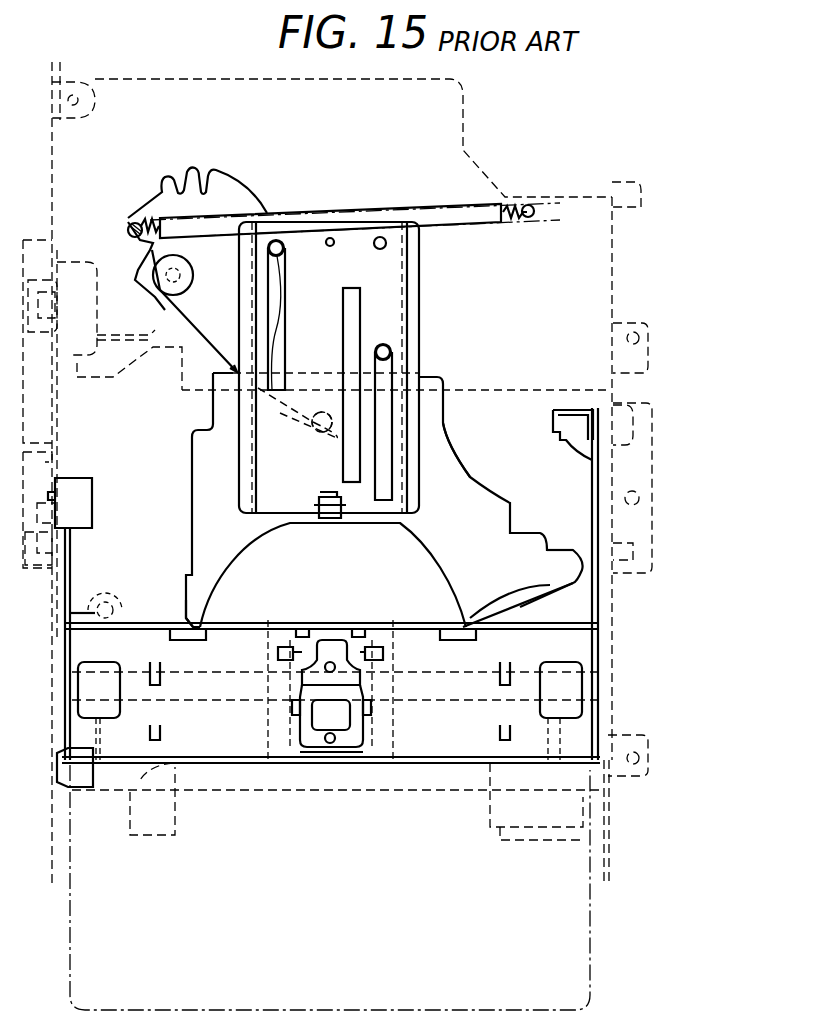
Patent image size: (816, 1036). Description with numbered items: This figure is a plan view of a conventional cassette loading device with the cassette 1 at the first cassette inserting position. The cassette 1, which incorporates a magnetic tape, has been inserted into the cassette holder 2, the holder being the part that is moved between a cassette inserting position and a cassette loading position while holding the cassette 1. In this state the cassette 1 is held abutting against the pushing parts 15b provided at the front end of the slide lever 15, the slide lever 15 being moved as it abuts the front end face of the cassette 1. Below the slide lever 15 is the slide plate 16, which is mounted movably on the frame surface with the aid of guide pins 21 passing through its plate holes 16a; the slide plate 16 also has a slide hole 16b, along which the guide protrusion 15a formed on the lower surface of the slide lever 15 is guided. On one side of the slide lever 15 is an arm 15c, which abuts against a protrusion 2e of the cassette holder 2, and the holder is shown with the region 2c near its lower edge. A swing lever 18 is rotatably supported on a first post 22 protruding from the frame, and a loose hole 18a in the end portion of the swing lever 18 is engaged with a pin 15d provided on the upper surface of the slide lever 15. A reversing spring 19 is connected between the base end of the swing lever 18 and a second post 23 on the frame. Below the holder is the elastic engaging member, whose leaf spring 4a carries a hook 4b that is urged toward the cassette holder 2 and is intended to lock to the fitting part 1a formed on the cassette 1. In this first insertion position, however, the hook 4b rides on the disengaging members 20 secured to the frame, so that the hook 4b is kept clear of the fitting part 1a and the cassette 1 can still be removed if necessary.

The cassette 1 is at (555, 978).
The fitting part 1a is at (305, 720).
The cassette holder 2 is at (545, 655).
The frame notch 2c is at (205, 624).
The protrusion 2e is at (580, 450).
The leaf spring 4a is at (352, 722).
The hook 4b is at (328, 638).
The slide lever 15 is at (460, 486).
The guide protrusion 15a is at (412, 442).
The pushing parts 15b is at (180, 610).
The arm 15c is at (578, 552).
The pin 15d is at (311, 440).
The slide plate 16 is at (400, 222).
The plate holes 16a is at (402, 390).
The slide hole 16b is at (357, 305).
The swing lever 18 is at (233, 198).
The loose hole 18a is at (282, 440).
The reversing spring 19 is at (462, 210).
The disengaging members 20 is at (287, 618).
The guide pins 21 is at (280, 240).
The first post 22 is at (172, 285).
The second post 23 is at (525, 204).